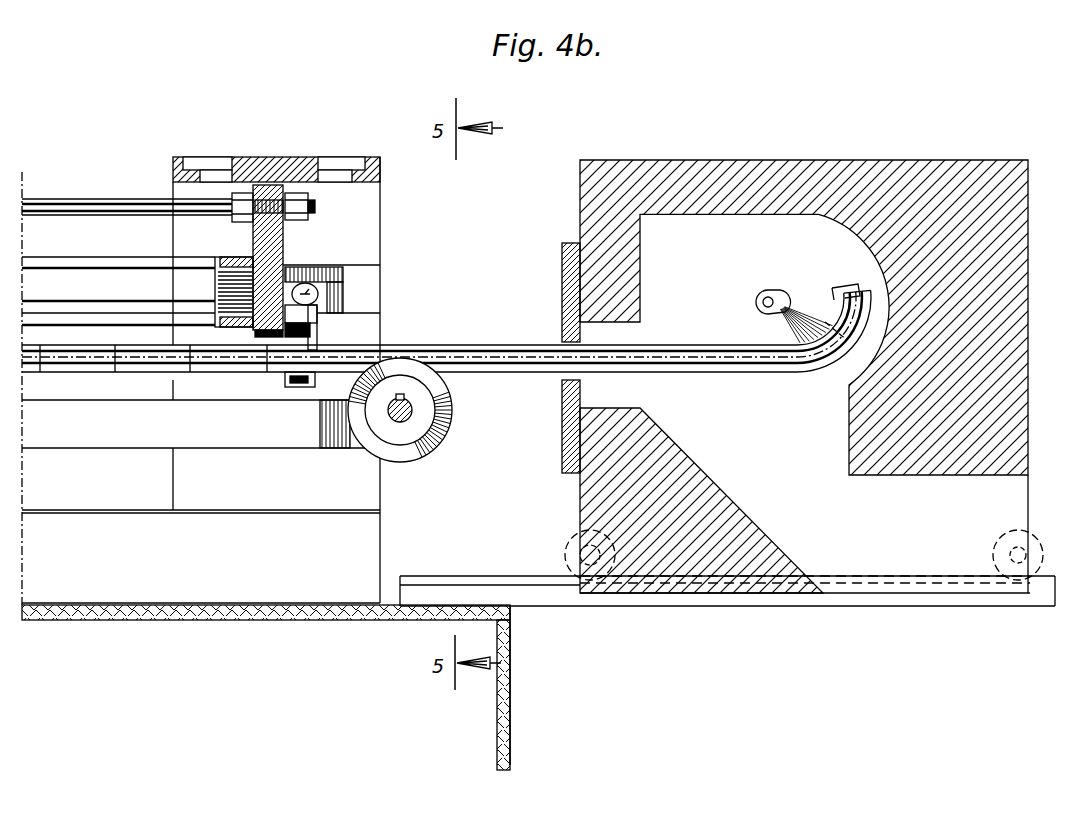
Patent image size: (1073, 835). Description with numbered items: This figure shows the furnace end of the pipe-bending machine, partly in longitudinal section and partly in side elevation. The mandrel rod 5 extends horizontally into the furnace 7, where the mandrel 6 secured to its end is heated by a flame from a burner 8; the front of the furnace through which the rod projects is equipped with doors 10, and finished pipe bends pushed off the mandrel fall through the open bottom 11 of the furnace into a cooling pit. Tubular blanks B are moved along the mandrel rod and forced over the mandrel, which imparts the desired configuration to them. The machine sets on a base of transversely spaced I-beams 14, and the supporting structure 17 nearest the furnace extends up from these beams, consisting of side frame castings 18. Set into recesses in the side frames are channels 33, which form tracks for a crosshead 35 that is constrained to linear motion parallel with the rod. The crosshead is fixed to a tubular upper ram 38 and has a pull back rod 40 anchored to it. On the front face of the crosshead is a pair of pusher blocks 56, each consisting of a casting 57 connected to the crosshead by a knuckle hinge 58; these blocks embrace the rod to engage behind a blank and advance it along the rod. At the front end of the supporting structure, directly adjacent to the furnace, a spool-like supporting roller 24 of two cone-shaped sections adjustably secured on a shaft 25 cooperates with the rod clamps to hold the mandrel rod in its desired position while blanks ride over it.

The mandrel rod 5 is at (457, 345).
The mandrel 6 is at (848, 299).
The furnace 7 is at (954, 162).
The burner 8 is at (780, 289).
The doors 10 is at (561, 282).
The open bottom 11 is at (782, 488).
The I-beams 14 is at (367, 548).
The supporting structure 17 is at (273, 155).
The side frame castings 18 is at (318, 242).
The supporting roller 24 is at (459, 432).
The shaft 25 is at (404, 422).
The channels 33 is at (363, 303).
The crosshead 35 is at (282, 236).
The upper ram 38 is at (60, 256).
The pull back rod 40 is at (66, 198).
The pusher blocks 56 is at (337, 331).
The casting 57 is at (327, 318).
The knuckle hinge 58 is at (306, 294).
The tubular blanks B is at (416, 341).